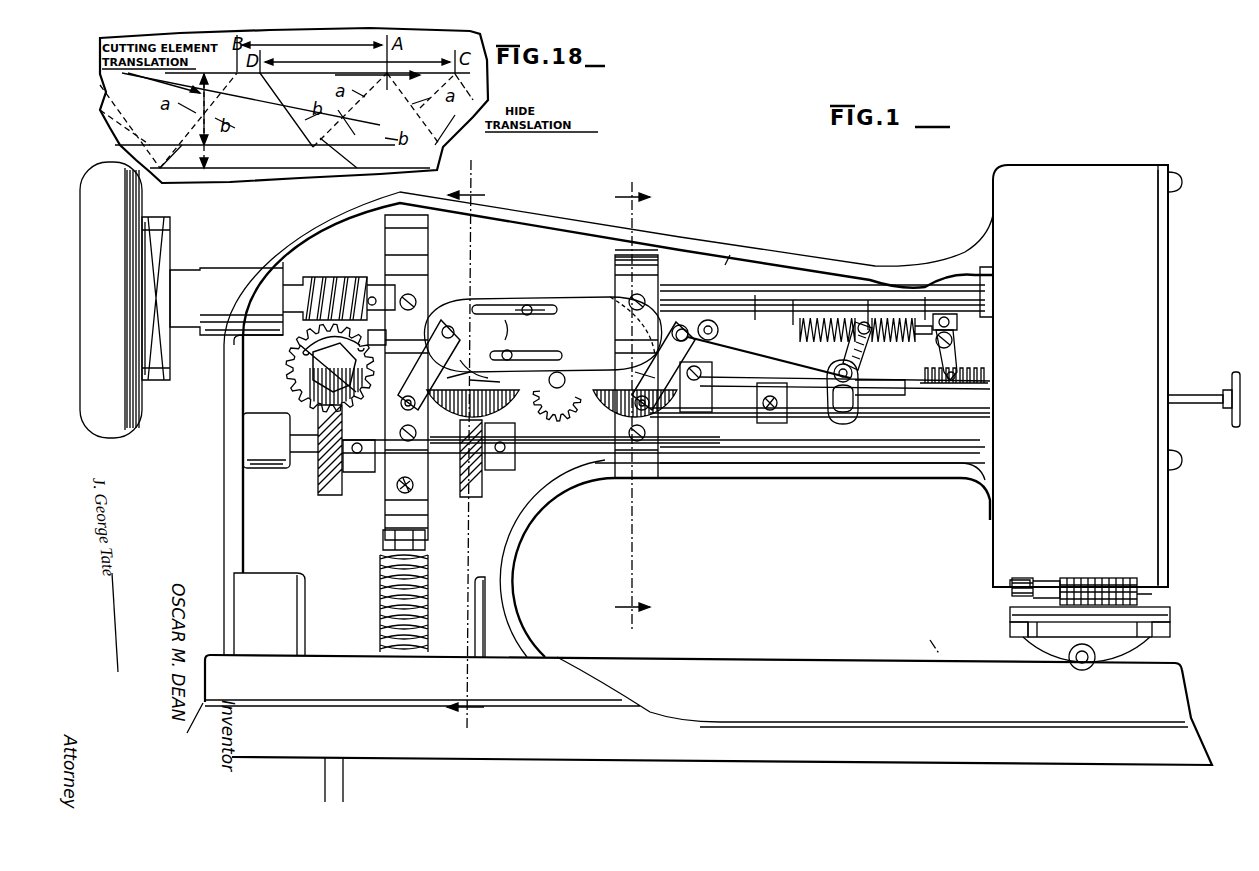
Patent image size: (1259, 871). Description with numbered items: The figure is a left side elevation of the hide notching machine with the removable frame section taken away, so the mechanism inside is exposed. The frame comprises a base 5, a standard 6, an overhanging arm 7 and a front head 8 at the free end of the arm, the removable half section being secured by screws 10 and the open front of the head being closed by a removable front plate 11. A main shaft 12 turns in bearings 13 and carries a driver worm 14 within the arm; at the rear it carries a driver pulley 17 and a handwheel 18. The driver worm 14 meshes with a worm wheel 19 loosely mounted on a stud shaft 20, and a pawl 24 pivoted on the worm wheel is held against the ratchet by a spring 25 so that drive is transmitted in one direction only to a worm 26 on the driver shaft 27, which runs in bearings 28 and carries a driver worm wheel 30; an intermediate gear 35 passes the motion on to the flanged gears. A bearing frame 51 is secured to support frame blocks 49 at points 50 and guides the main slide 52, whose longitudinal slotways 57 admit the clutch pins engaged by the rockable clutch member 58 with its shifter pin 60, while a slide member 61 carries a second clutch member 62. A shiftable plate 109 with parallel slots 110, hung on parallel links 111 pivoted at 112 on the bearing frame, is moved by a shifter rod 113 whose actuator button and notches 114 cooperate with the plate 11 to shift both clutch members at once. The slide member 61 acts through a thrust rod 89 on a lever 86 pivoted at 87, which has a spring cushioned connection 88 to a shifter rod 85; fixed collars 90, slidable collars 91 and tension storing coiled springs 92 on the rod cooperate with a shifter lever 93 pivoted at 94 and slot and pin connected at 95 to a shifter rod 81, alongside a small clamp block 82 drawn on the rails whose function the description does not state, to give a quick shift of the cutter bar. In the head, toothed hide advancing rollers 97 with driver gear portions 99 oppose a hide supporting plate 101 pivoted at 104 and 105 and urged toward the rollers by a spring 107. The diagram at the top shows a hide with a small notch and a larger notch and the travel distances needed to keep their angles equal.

The base 5 is at (693, 444).
The standard 6 is at (212, 428).
The overhanging arm 7 is at (733, 248).
The front head 8 is at (1087, 376).
The screws 10 is at (398, 487).
The removable front plate 11 is at (1165, 340).
The main shaft 12 is at (706, 300).
The bearings 13 is at (275, 272).
The driver worm 14 is at (330, 272).
The driver pulley 17 is at (148, 312).
The handwheel 18 is at (109, 300).
The worm wheel 19 is at (292, 372).
The stud shaft 20 is at (328, 367).
The pawl 24 is at (300, 392).
The spring 25 is at (300, 348).
The worm 26 is at (323, 490).
The driver shaft 27 is at (300, 470).
The bearings 28 is at (252, 450).
The driver worm wheel 30 is at (483, 480).
The intermediate gear 35 is at (557, 401).
The support frame blocks 49 is at (430, 244).
The securing points 50 is at (408, 294).
The bearing frame 51 is at (432, 300).
The main slide 52 is at (477, 364).
The longitudinal slotways 57 is at (552, 407).
The rockable clutch member 58 is at (545, 351).
The shifter pin 60 is at (510, 350).
The slide member 61 is at (386, 337).
The rockable clutch member 62 is at (542, 304).
The shifter rod 81 is at (965, 415).
The clamp block 82 is at (762, 410).
The shifter rod 85 is at (925, 390).
The lever 86 is at (960, 356).
The pivot 87 is at (960, 340).
The spring cushioned connection 88 is at (972, 375).
The thrust rod 89 is at (752, 318).
The fixed collars 90 is at (795, 322).
The slidable collars 91 is at (868, 328).
The tension storing coiled spring 92 is at (815, 345).
The shifter lever 93 is at (873, 335).
The pivot 94 is at (855, 405).
The slot and pin connection 95 is at (835, 405).
The toothed hide advancing roller 97 is at (1145, 598).
The driver gear portion 99 is at (1012, 592).
The hide supporting plate 101 is at (1170, 612).
The pivot 104 is at (1012, 628).
The pivot 105 is at (1100, 658).
The spring 107 is at (378, 552).
The shiftable plate 109 is at (575, 308).
The parallel slots 110 is at (506, 325).
The parallel links 111 is at (480, 380).
The pivots 112 is at (430, 380).
The shifter rod 113 is at (732, 336).
The actuator button and notches 114 is at (1218, 396).